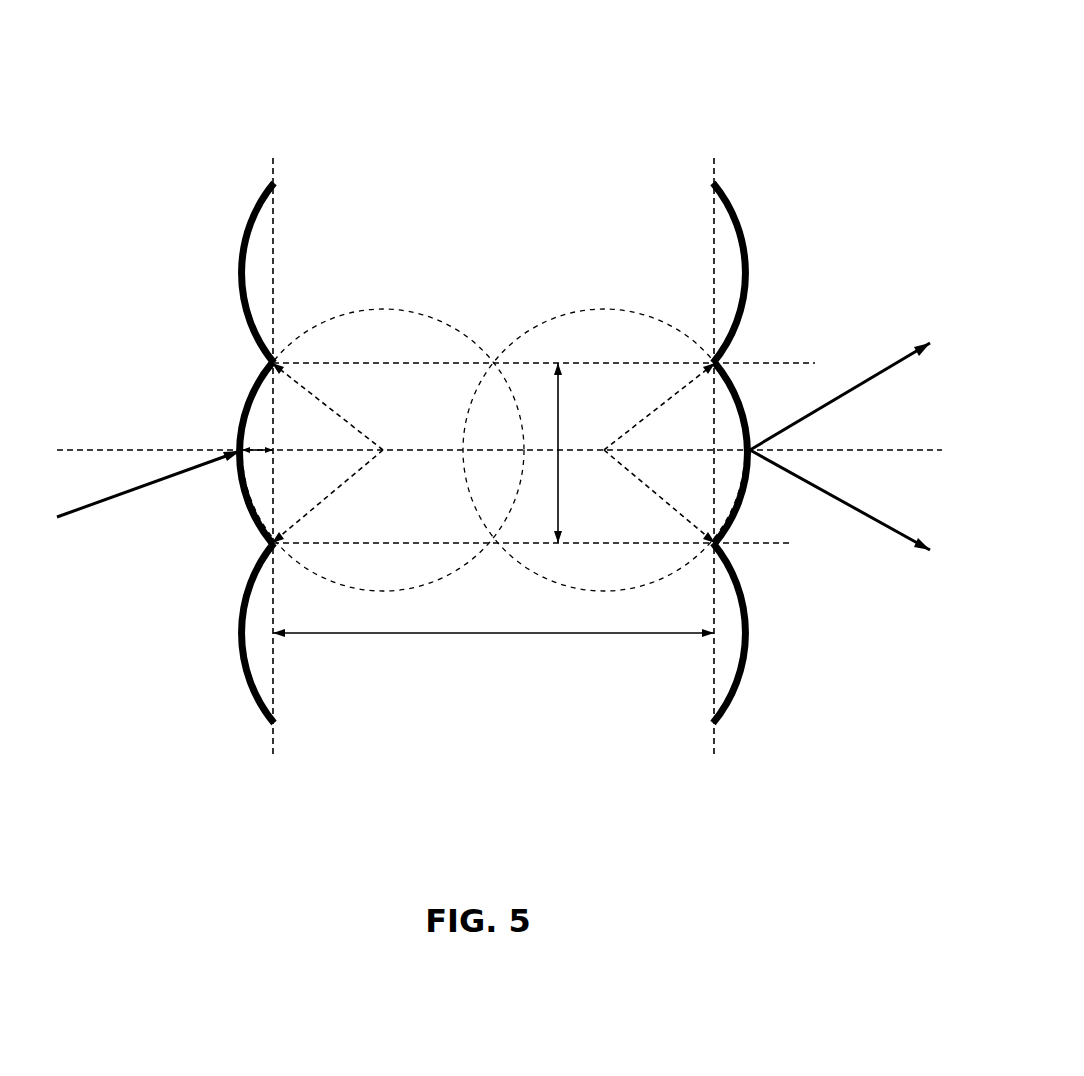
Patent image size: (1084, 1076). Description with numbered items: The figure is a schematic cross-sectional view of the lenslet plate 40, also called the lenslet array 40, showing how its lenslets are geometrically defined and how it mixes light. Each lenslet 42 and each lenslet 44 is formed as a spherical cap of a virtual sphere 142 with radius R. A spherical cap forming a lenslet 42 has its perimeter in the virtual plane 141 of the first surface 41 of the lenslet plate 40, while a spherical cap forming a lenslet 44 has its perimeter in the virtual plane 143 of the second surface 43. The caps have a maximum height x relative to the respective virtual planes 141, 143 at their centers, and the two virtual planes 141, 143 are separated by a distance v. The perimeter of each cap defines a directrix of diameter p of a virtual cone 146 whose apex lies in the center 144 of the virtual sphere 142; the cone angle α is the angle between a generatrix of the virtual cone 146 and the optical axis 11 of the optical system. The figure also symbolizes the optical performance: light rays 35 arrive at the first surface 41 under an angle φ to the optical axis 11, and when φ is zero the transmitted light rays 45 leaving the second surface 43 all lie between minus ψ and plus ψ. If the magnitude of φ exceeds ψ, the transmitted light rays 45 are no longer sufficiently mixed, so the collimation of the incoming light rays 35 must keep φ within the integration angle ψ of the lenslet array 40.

The optical axis 11 is at (72, 450).
The light rays 35 is at (97, 505).
The lenslet plate 40 is at (528, 530).
The first surface 41 is at (275, 385).
The lenslet 42 is at (250, 393).
The second surface 43 is at (709, 387).
The lenslet 44 is at (735, 393).
The light rays 45 is at (853, 512).
The virtual plane 141 is at (275, 238).
The virtual sphere 142 is at (438, 322).
The virtual plane 143 is at (713, 240).
The center 144 is at (384, 443).
The virtual cone 146 is at (313, 488).